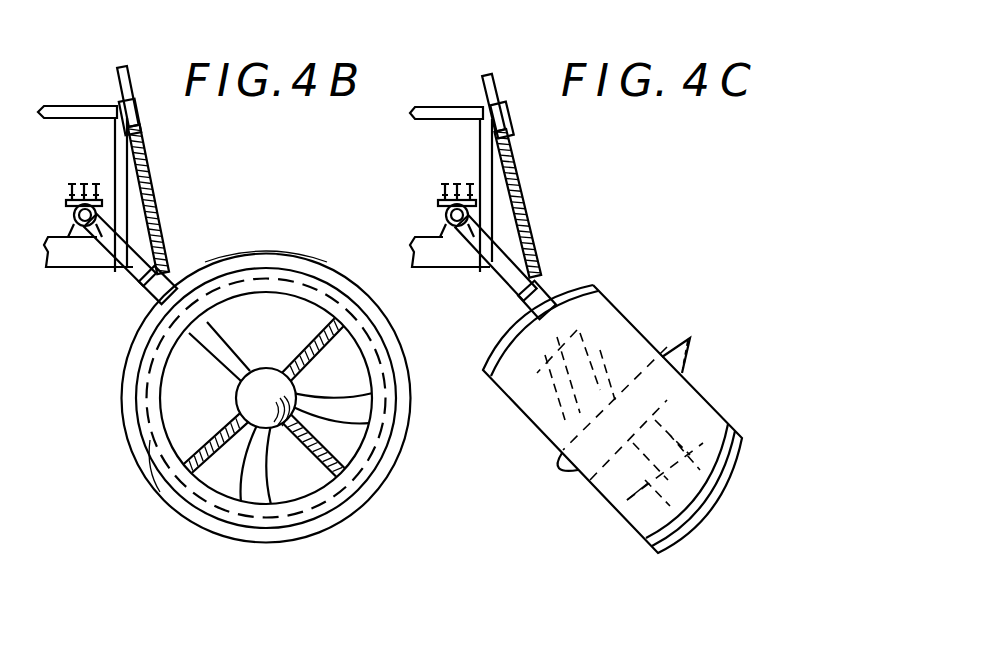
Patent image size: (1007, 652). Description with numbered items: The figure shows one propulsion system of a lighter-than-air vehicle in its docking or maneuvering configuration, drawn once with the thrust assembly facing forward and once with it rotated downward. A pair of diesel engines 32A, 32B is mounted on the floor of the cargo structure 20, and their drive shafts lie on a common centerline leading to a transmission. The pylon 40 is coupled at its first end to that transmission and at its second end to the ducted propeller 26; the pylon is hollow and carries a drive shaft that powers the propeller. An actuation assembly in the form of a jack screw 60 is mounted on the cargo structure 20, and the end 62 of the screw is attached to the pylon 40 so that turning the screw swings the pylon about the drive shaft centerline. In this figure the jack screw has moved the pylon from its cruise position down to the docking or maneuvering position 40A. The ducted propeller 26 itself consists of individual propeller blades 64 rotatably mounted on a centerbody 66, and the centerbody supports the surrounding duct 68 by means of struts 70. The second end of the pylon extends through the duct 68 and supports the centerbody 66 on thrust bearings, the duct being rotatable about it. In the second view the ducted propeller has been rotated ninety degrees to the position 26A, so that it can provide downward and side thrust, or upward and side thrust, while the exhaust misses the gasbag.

In FIG. 4B, the cargo structure 20 is at (97, 278).
In FIG. 4C, the cargo structure 20 is at (460, 280).
In FIG. 4B, the ducted propeller 26 is at (374, 508).
In FIG. 4C, the rotated ducted propeller position 26A is at (752, 468).
In FIG. 4B, the diesel engine 32A is at (70, 197).
In FIG. 4C, the diesel engine 32A is at (457, 190).
In FIG. 4B, the diesel engine 32B is at (118, 118).
In FIG. 4C, the diesel engine 32B is at (433, 161).
In FIG. 4C, the pylon 40 is at (507, 255).
In FIG. 4B, the docking or maneuvering position of the pylon 40A is at (128, 275).
In FIG. 4B, the jack screw 60 is at (143, 108).
In FIG. 4C, the jack screw 60 is at (500, 103).
In FIG. 4B, the end of the screw 62 is at (183, 272).
In FIG. 4C, the end of the screw 62 is at (550, 292).
In FIG. 4B, the propeller blades 64 is at (362, 440).
In FIG. 4B, the centerbody 66 is at (152, 462).
In FIG. 4C, the centerbody 66 is at (690, 363).
In FIG. 4B, the duct 68 is at (290, 257).
In FIG. 4C, the duct 68 is at (698, 508).
In FIG. 4B, the struts 70 is at (305, 337).